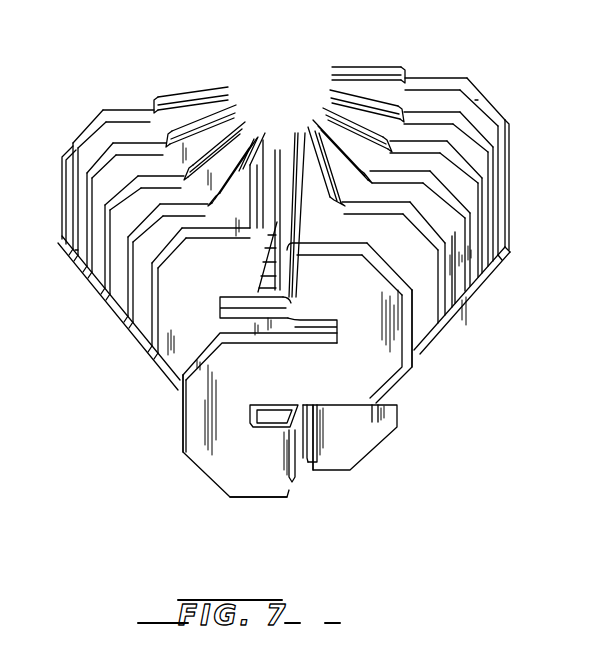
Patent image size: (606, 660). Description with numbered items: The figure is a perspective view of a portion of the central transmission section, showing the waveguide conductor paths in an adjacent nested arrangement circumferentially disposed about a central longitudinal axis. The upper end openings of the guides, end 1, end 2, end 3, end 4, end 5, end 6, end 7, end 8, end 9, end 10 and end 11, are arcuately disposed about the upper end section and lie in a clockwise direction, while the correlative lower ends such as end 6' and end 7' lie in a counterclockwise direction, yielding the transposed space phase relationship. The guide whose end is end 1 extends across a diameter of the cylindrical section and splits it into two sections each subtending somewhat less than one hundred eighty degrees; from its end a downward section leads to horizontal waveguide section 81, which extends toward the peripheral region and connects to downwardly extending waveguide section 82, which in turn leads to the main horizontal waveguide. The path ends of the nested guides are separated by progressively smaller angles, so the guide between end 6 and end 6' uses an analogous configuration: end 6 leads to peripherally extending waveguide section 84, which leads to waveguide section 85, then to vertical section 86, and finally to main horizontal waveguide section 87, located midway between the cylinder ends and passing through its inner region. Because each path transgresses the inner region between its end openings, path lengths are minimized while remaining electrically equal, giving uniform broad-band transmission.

The waveguide end opening 1 is at (366, 68).
The waveguide end opening 2 is at (362, 104).
The waveguide end opening 3 is at (360, 134).
The waveguide end opening 4 is at (342, 156).
The waveguide end opening 5 is at (322, 181).
The waveguide end opening 6 is at (283, 307).
The waveguide end opening 7 is at (206, 246).
The waveguide end opening 8 is at (231, 167).
The waveguide end opening 9 is at (213, 145).
The waveguide end opening 10 is at (201, 124).
The waveguide end opening 11 is at (201, 90).
The waveguide end opening 6' is at (303, 465).
The waveguide end opening 7' is at (325, 453).
The horizontal waveguide section 81 is at (474, 106).
The downwardly extending waveguide section 82 is at (62, 206).
The peripherally extending waveguide section 84 is at (300, 441).
The waveguide section 85 is at (342, 247).
The vertical waveguide section 86 is at (392, 307).
The main horizontal waveguide section 87 is at (305, 383).